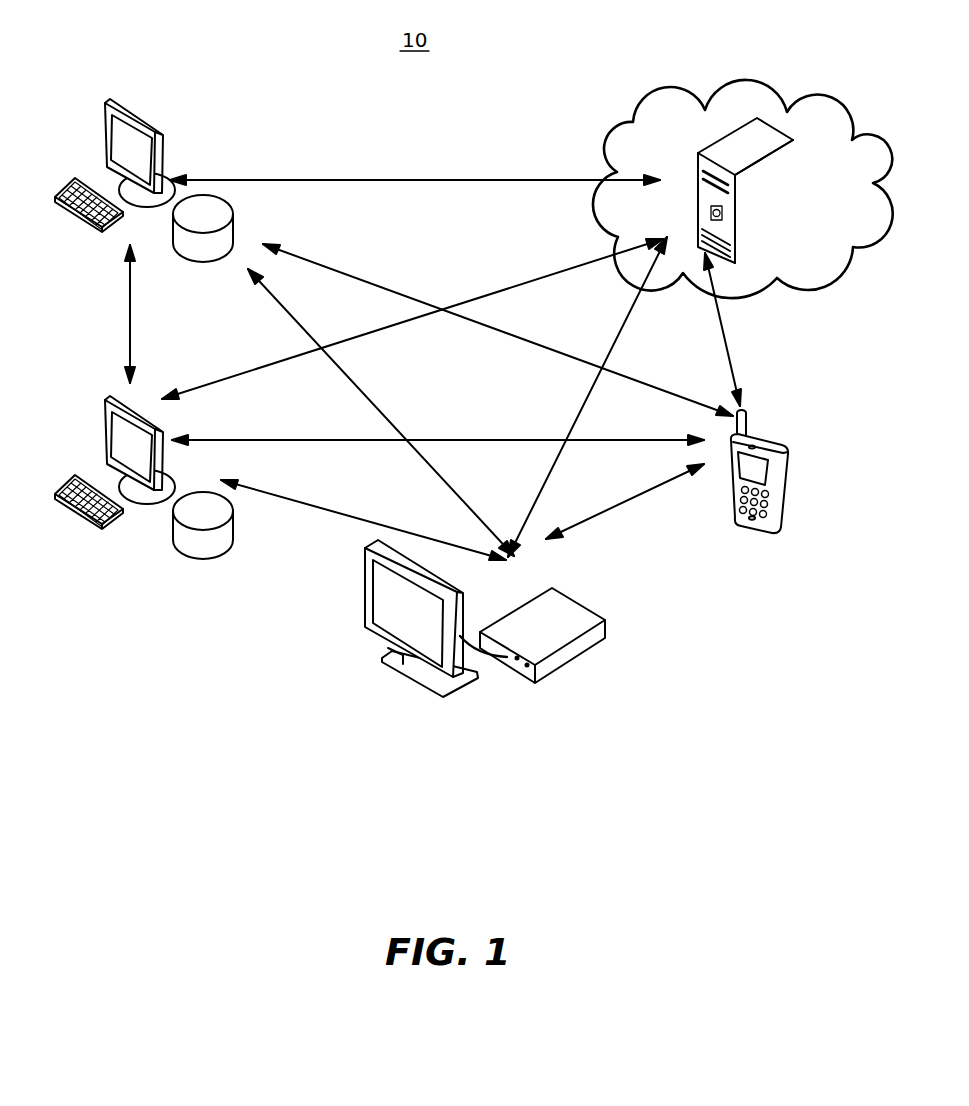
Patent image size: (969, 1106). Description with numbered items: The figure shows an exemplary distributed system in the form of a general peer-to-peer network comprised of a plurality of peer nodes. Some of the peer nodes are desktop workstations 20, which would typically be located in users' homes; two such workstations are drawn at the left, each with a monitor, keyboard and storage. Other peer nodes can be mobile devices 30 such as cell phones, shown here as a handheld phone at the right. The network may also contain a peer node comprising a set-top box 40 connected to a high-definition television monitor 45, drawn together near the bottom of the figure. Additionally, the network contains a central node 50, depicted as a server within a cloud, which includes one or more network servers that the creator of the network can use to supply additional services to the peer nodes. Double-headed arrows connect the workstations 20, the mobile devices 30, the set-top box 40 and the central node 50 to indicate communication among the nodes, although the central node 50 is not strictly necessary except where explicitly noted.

The desktop workstation 20 is at (142, 115).
The mobile device 30 is at (770, 433).
The set-top box 40 is at (582, 600).
The high-definition television monitor 45 is at (365, 588).
The central node 50 is at (772, 117).